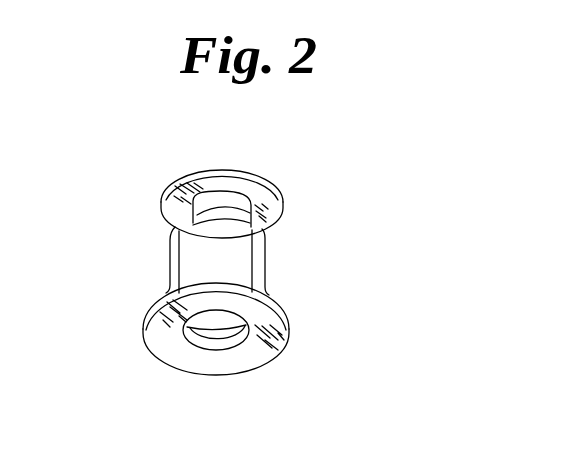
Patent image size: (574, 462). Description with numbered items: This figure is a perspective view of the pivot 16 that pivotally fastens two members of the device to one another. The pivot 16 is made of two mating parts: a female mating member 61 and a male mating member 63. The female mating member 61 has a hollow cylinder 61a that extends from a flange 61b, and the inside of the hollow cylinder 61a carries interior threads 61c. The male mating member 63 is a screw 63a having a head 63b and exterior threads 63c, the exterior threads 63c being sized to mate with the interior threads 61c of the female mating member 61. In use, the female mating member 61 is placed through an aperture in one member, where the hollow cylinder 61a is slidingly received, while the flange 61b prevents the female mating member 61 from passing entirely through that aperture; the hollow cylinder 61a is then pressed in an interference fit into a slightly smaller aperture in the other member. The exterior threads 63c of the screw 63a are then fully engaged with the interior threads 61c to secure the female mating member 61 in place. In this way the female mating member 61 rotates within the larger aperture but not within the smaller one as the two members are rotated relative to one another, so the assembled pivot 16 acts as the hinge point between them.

The pivot 16 is at (275, 383).
The female mating member 61 is at (290, 310).
The hollow cylinder 61a is at (265, 275).
The flange 61b is at (162, 292).
The interior threads 61c is at (200, 337).
The male mating member 63 is at (167, 187).
The screw 63a is at (206, 170).
The head 63b is at (265, 178).
The exterior threads 63c is at (206, 221).